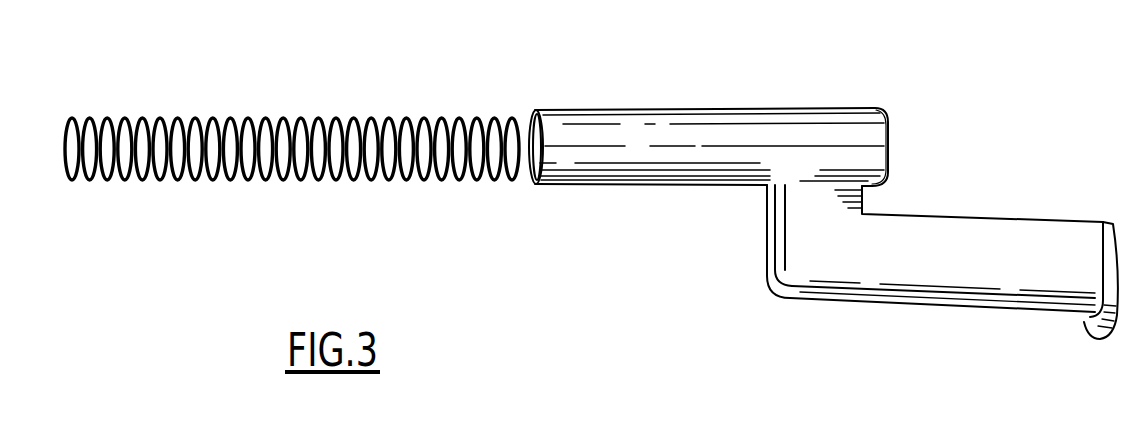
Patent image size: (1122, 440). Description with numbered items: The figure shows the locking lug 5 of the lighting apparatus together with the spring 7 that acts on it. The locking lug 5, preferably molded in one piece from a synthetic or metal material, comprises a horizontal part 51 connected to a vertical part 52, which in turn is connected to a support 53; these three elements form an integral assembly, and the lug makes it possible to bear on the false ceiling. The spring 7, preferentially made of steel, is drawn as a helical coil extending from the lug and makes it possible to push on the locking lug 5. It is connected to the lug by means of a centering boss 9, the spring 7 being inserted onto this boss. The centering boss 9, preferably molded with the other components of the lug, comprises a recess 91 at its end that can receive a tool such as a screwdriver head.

The spring 7 is at (247, 118).
The centering boss 9 is at (648, 152).
The recess 91 is at (891, 152).
The locking lug 5 is at (900, 277).
The horizontal part 51 is at (802, 226).
The vertical part 52 is at (950, 263).
The support 53 is at (1090, 320).